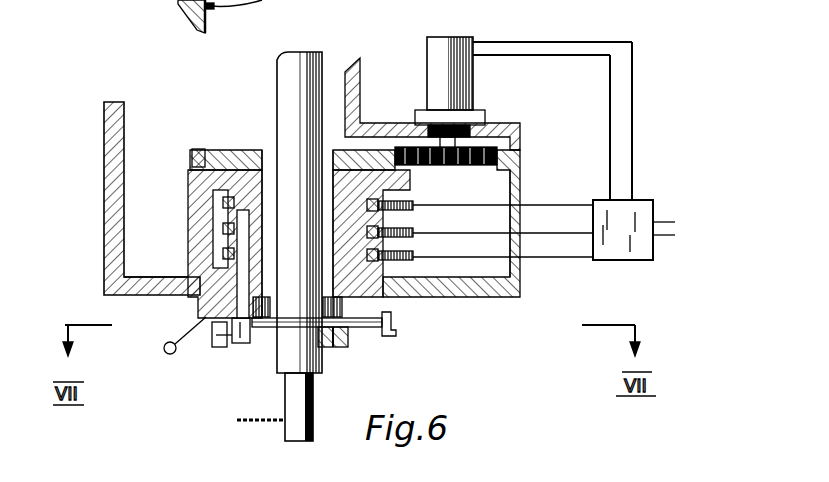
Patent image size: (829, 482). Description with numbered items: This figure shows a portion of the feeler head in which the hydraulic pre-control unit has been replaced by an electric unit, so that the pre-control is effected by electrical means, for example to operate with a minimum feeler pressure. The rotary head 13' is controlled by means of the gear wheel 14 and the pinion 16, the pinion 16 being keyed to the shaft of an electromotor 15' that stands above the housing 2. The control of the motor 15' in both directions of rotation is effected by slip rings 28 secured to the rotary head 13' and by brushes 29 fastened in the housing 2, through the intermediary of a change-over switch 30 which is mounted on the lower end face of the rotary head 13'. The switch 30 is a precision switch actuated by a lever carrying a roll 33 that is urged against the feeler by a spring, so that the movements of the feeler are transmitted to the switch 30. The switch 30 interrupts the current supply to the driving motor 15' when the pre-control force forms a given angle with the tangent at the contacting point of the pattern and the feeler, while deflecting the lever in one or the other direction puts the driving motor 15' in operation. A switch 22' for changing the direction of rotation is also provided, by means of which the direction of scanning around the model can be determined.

The housing 2 is at (483, 292).
The gear wheel 14 is at (204, 150).
The electromotor 15' is at (449, 58).
The pinion 16 is at (447, 165).
The switch for changing the direction of rotation 22' is at (634, 243).
The slip rings 28 is at (367, 255).
The brushes 29 is at (413, 257).
The change-over switch 30 is at (243, 345).
The roll 33 is at (350, 342).
The rotary head 13' is at (403, 342).